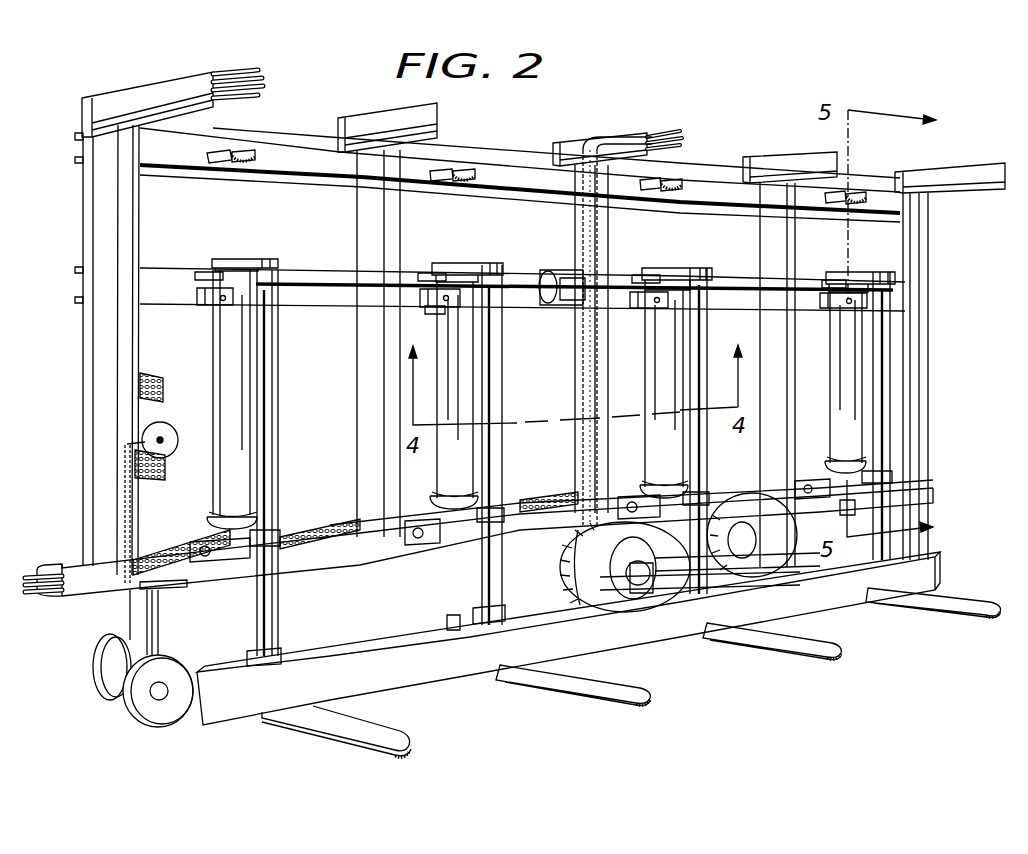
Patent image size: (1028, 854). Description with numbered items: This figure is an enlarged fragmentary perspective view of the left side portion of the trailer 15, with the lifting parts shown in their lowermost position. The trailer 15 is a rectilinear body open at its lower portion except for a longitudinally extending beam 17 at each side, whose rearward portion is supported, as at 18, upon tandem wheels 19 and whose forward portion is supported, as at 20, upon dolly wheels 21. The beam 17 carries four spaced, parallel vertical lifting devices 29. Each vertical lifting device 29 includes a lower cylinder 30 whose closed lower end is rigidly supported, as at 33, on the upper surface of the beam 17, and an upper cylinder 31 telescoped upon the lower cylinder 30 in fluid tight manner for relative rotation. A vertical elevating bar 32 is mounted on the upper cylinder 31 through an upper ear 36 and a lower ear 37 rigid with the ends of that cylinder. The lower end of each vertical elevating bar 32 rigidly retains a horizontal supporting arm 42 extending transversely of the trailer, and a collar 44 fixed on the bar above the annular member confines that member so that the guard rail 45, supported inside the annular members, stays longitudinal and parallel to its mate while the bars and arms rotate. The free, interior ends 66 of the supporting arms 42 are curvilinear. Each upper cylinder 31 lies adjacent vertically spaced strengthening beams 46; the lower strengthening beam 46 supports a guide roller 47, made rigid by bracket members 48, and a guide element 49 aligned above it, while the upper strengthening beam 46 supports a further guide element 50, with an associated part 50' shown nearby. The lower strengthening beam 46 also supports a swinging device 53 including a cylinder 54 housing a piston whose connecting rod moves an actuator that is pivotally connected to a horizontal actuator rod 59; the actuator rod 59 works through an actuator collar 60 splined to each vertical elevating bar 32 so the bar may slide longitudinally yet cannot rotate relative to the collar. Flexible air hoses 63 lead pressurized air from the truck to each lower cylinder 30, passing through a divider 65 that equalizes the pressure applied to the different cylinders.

The trailer 15 is at (104, 360).
The longitudinally extending beam 17 is at (345, 565).
The rearward beam support 18 is at (640, 595).
The tandem wheels 19 is at (560, 570).
The forward beam support 20 is at (160, 612).
The dolly wheels 21 is at (138, 720).
The vertical lifting device 29 is at (213, 362).
The lower cylinder 30 is at (233, 563).
The upper cylinder 31 is at (213, 488).
The vertical elevating bar 32 is at (278, 428).
The lower cylinder support 33 is at (852, 490).
The upper ear 36 is at (240, 260).
The lower ear 37 is at (690, 490).
The horizontal supporting arm 42 is at (352, 726).
The collar 44 is at (250, 660).
The guard rail 45 is at (388, 626).
The strengthening beam 46 is at (322, 172).
The guide roller 47 is at (212, 306).
The bracket member 48 is at (436, 314).
The guide element 49 is at (208, 272).
The guide element 50 is at (543, 145).
The beam strands 50' is at (682, 148).
The swinging device 53 is at (552, 270).
The cylinder 54 is at (565, 300).
The actuator rod 59 is at (328, 268).
The actuator collar 60 is at (262, 292).
The flexible air hose 63 is at (155, 376).
The divider 65 is at (166, 432).
The free interior end 66 is at (410, 755).